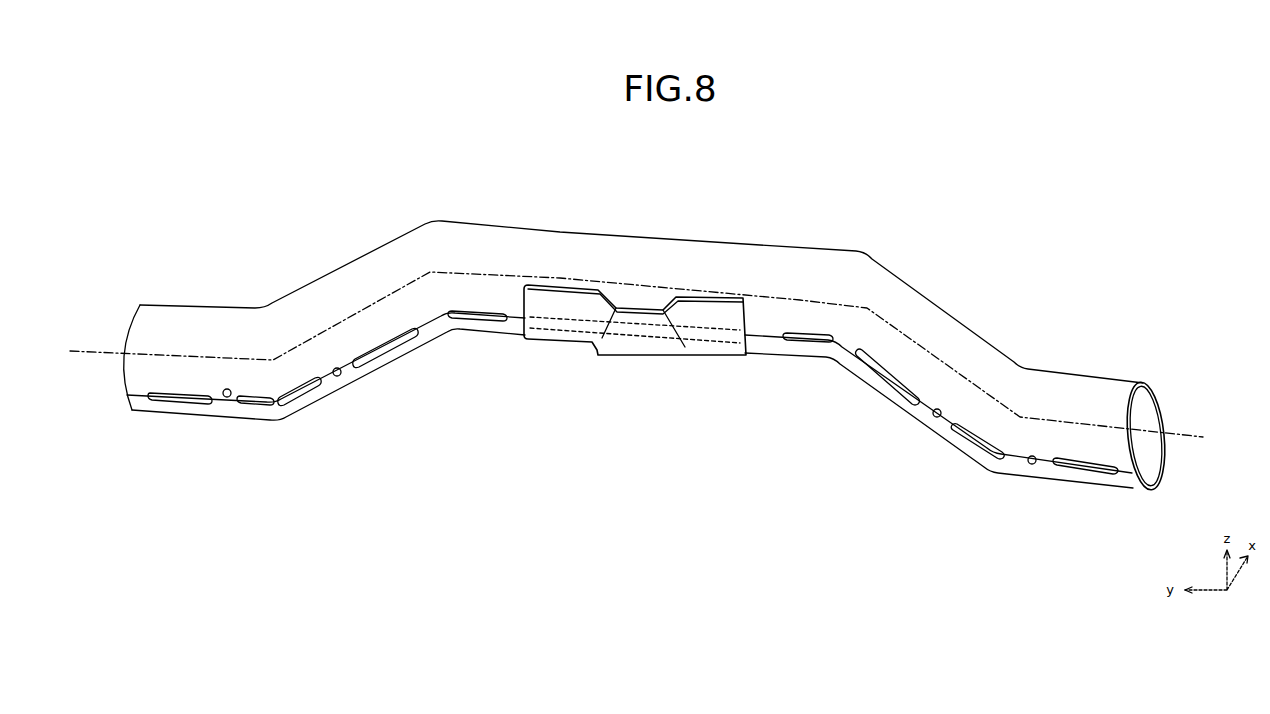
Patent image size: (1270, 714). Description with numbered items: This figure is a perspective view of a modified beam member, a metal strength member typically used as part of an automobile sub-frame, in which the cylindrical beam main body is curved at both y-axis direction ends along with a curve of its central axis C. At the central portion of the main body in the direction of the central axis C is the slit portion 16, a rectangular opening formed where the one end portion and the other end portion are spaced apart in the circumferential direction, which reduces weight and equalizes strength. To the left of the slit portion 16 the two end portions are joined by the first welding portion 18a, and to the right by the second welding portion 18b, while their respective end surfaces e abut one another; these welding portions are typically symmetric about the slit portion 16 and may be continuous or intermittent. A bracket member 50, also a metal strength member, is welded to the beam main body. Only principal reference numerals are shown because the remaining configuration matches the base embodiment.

The slit portion 16 is at (701, 335).
The first welding portion 18a is at (172, 400).
The second welding portion 18b is at (860, 366).
The bracket member 50 is at (547, 356).
The end surface e is at (336, 368).
The central axis C is at (1172, 430).